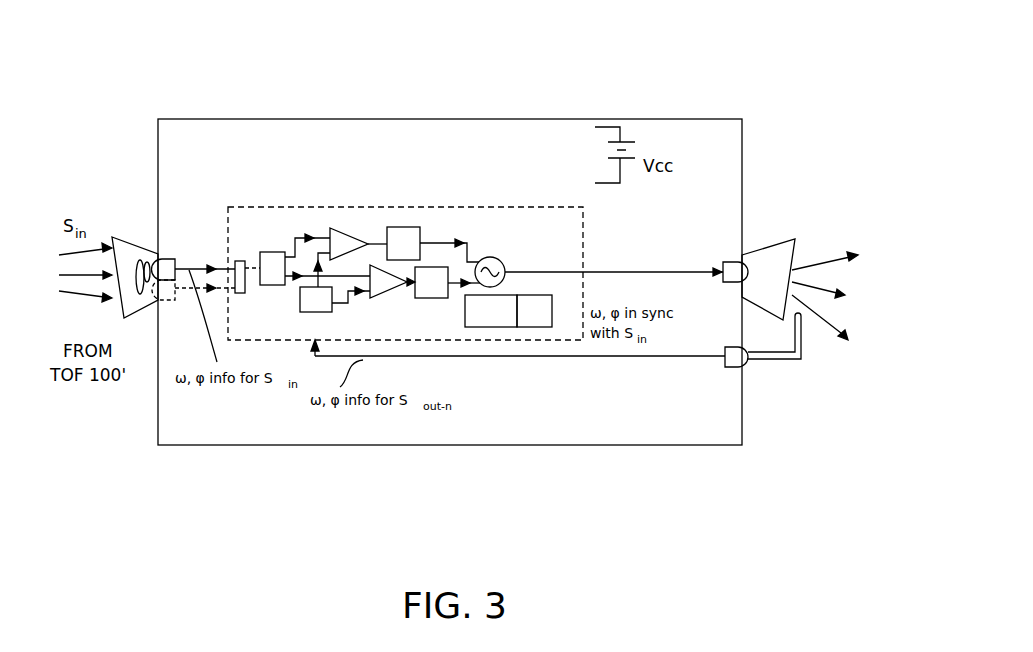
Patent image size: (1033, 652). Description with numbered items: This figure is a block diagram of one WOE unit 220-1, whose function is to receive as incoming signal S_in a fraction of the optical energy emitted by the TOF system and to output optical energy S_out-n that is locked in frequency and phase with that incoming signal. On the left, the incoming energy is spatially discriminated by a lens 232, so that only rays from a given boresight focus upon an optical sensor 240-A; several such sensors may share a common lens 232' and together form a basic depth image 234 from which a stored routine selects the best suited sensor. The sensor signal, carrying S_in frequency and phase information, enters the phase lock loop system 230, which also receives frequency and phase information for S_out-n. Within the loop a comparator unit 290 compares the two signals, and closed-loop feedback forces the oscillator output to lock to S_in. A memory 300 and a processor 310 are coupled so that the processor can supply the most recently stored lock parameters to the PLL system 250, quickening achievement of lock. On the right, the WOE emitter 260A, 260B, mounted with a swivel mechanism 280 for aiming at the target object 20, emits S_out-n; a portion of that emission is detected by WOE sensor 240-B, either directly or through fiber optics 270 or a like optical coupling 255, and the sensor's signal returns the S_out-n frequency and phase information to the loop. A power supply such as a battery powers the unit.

The WOE unit 220-1 is at (435, 110).
The phase lock loop (PLL) system 230 is at (143, 239).
The lens 232 is at (179, 234).
The common lens 232' is at (157, 311).
The optical sensor 240-A is at (168, 258).
The WOE sensor 240-B is at (738, 367).
The basic depth image 234 is at (242, 294).
The PLL system 250 is at (383, 207).
The WOE emitter 260A is at (264, 258).
The WOE emitter 260B is at (305, 312).
The fiber optics 270 is at (397, 309).
The swivel mechanism 280 is at (495, 258).
The comparator unit 290 is at (730, 261).
The memory 300 is at (480, 328).
The processor 310 is at (547, 328).
The optical feedback path 255 is at (768, 360).
The target object 20 is at (830, 217).